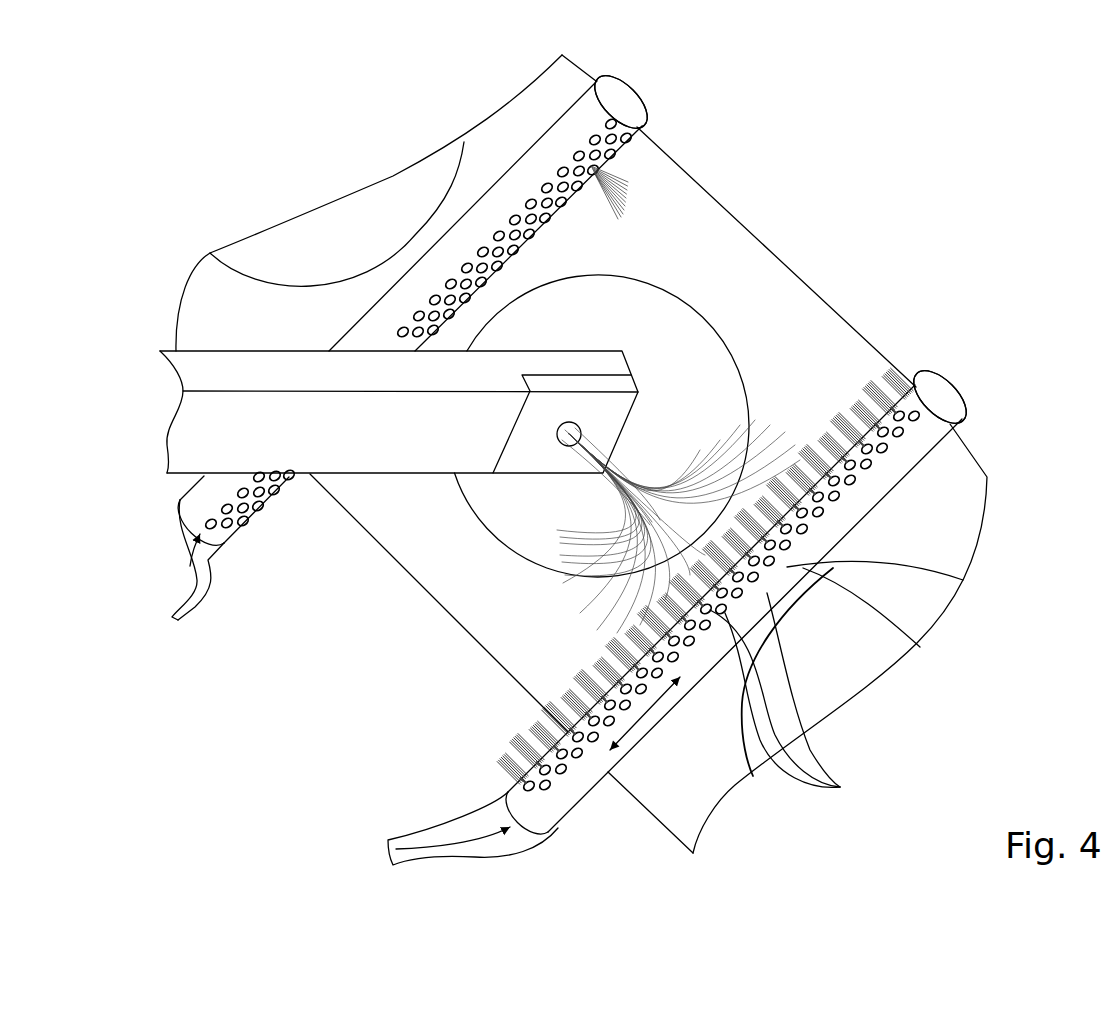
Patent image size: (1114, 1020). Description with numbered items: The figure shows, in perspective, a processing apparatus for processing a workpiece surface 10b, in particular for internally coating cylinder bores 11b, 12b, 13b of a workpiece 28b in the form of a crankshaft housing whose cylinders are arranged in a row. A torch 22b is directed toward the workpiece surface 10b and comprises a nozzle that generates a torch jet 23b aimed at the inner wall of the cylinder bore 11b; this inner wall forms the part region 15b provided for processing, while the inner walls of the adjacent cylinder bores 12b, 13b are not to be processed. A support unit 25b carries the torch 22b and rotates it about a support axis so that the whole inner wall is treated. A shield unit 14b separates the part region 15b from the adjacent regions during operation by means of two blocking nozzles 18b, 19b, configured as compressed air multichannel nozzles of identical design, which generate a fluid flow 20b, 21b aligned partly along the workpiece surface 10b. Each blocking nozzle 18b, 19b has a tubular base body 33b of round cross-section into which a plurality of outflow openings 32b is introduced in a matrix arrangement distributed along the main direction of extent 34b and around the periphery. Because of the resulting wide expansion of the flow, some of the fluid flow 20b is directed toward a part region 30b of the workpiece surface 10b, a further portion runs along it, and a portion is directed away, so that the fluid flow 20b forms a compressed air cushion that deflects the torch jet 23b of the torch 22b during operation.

The workpiece surface 10b is at (722, 265).
The cylinder bore 11b is at (708, 360).
The cylinder bore 12b is at (860, 670).
The cylinder bore 13b is at (298, 227).
The shield unit 14b is at (651, 84).
The part region 15b is at (693, 477).
The blocking nozzle 18b is at (948, 404).
The blocking nozzle 19b is at (633, 113).
The fluid flow 20b is at (893, 367).
The fluid flow 21b is at (622, 190).
The torch 22b is at (547, 460).
The torch jet 23b is at (607, 487).
The support unit 25b is at (367, 488).
The workpiece 28b is at (578, 70).
The part region 30b is at (862, 544).
The outflow openings 32b is at (801, 687).
The base body 33b is at (920, 647).
The main direction of extent 34b is at (657, 717).